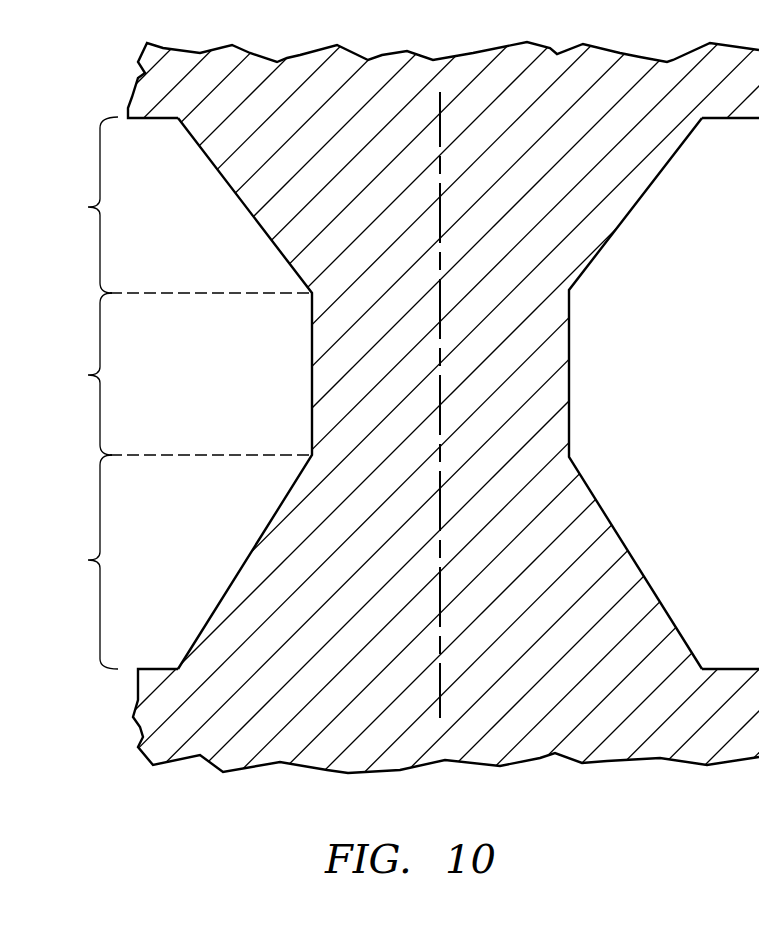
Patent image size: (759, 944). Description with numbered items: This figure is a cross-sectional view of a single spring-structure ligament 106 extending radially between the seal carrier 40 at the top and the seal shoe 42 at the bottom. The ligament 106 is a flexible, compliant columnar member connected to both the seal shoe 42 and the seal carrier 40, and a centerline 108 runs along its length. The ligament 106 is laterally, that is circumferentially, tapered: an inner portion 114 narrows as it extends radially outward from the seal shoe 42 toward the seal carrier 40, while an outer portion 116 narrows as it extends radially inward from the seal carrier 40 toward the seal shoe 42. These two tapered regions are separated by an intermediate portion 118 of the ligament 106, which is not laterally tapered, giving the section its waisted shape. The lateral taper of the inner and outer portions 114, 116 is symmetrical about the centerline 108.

The seal carrier 40 is at (112, 82).
The seal shoe 42 is at (112, 723).
The ligament 106 is at (598, 378).
The centerline 108 is at (498, 404).
The inner portion 114 is at (76, 562).
The outer portion 116 is at (173, 205).
The intermediate portion 118 is at (173, 374).